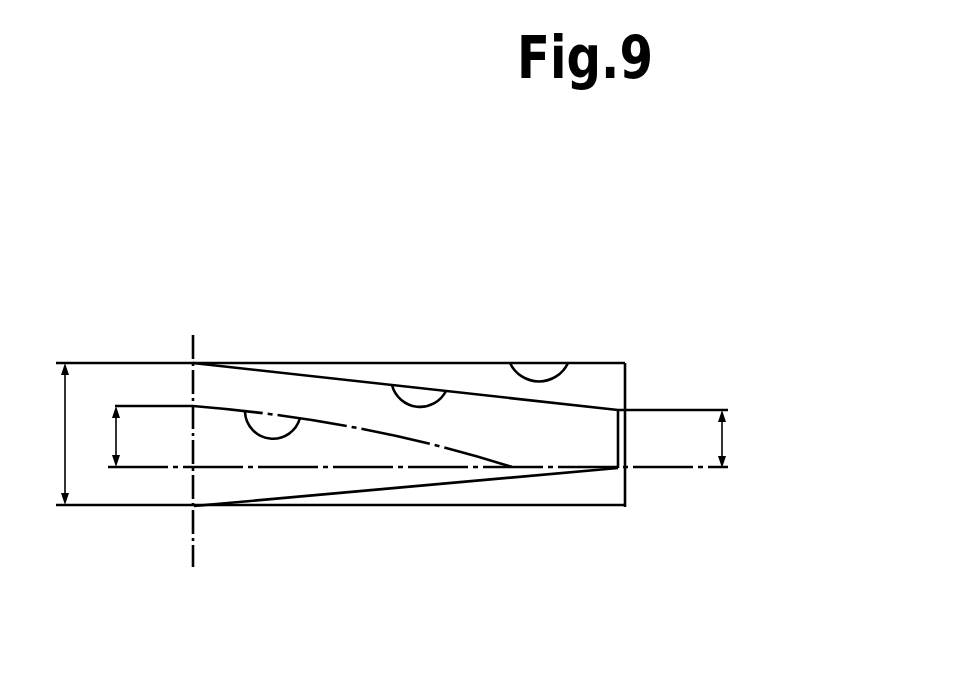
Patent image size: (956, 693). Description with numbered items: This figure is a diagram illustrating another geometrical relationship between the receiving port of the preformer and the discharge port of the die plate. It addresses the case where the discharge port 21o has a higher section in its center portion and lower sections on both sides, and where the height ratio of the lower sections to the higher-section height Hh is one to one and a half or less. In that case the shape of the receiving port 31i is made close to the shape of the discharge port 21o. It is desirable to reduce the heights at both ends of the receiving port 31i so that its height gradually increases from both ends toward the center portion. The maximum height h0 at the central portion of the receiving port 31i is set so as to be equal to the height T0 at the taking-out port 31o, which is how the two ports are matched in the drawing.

The discharge port 21o is at (268, 418).
The taking-out port 31o is at (447, 398).
The receiving port 31i is at (568, 366).
The height at the taking-out port T0 is at (40, 434).
The height of the higher section Hh is at (116, 438).
The maximum height at the central portion h0 is at (745, 439).